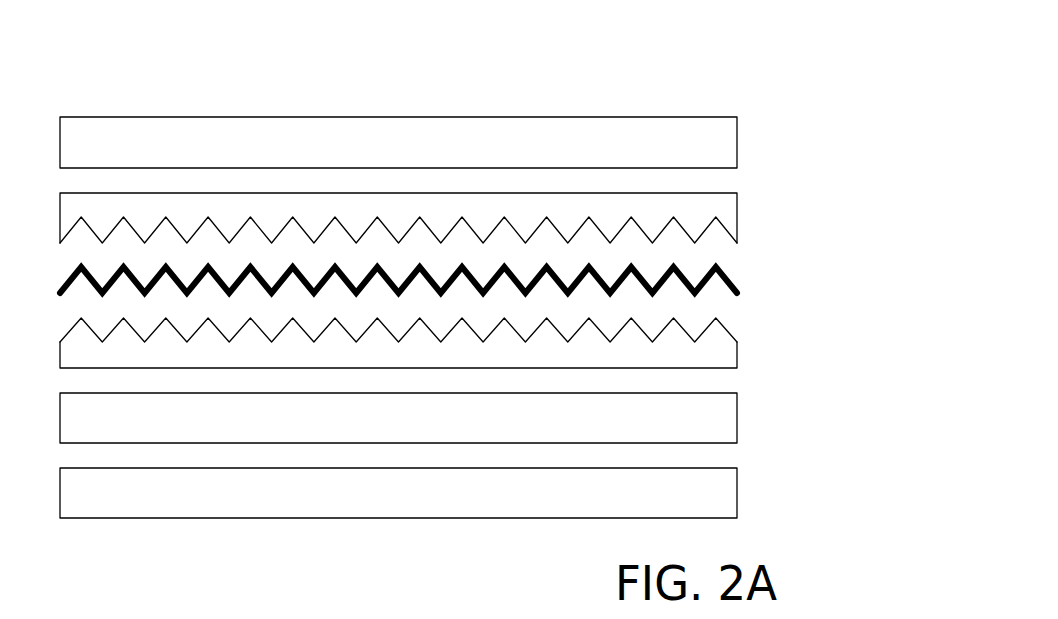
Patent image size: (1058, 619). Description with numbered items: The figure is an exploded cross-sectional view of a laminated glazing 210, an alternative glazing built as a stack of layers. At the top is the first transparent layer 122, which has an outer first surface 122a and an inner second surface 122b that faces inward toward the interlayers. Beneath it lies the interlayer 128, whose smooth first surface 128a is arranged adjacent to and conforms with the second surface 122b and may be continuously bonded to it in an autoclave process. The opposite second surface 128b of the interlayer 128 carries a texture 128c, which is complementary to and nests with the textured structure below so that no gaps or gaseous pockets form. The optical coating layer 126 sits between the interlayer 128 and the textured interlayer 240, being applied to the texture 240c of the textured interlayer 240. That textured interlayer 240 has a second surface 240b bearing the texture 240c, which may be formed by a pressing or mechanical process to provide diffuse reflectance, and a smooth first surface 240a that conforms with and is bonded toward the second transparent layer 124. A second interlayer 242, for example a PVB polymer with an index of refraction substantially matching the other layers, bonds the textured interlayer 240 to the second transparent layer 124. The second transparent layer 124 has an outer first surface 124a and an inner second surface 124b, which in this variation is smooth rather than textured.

The laminated glazing 210 is at (728, 92).
The first transparent layer 122 is at (737, 150).
The first surface 122a is at (525, 117).
The second surface 122b is at (472, 168).
The interlayer 128 is at (737, 223).
The first surface 128a is at (185, 193).
The second surface 128b is at (135, 230).
The texture 128c is at (228, 259).
The optical coating layer 126 is at (723, 273).
The textured interlayer 240 is at (737, 348).
The first surface 240a is at (408, 368).
The second surface 240b is at (497, 328).
The texture 240c is at (266, 313).
The second interlayer 242 is at (737, 415).
The second transparent layer 124 is at (737, 487).
The first surface 124a is at (198, 518).
The second surface 124b is at (147, 468).